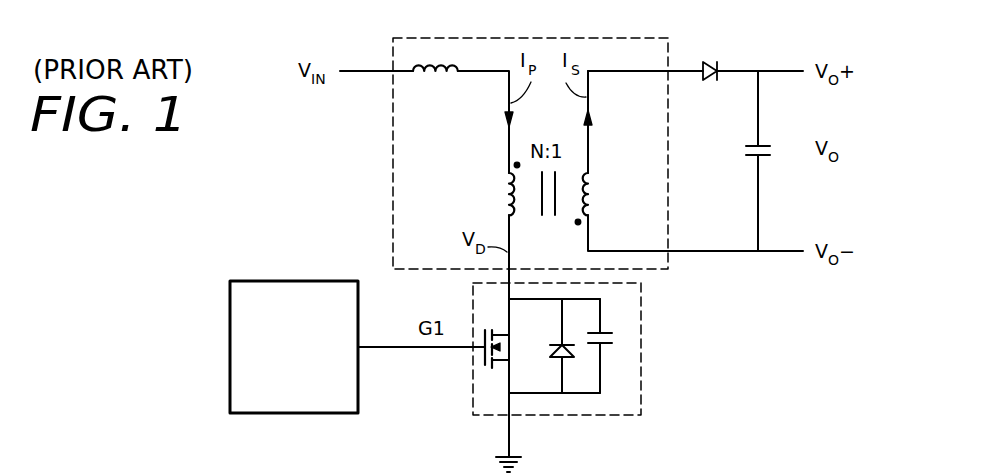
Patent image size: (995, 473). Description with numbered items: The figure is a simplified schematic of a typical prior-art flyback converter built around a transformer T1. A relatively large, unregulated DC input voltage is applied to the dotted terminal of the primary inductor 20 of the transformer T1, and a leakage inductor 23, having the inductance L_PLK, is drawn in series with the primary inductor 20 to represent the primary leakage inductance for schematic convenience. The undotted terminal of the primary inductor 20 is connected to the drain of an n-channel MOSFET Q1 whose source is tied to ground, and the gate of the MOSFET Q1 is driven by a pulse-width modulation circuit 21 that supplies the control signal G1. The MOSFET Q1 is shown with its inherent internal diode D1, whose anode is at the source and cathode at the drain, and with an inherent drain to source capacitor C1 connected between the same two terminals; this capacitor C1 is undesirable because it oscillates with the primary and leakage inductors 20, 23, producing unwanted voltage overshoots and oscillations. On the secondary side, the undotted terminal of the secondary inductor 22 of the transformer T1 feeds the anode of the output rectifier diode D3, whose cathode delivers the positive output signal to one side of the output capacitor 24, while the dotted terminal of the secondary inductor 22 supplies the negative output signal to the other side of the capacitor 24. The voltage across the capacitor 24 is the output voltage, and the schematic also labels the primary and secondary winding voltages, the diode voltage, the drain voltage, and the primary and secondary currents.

The primary inductor 20 is at (505, 180).
The pulse-width modulation circuit 21 is at (278, 281).
The secondary inductor 22 is at (580, 160).
The leakage inductor 23 is at (458, 70).
The output capacitor 24 is at (762, 158).
The transformer T1 is at (427, 38).
The MOSFET Q1 is at (473, 408).
The internal diode D1 is at (568, 358).
The drain to source capacitor C1 is at (607, 343).
The output rectifier diode D3 is at (706, 82).